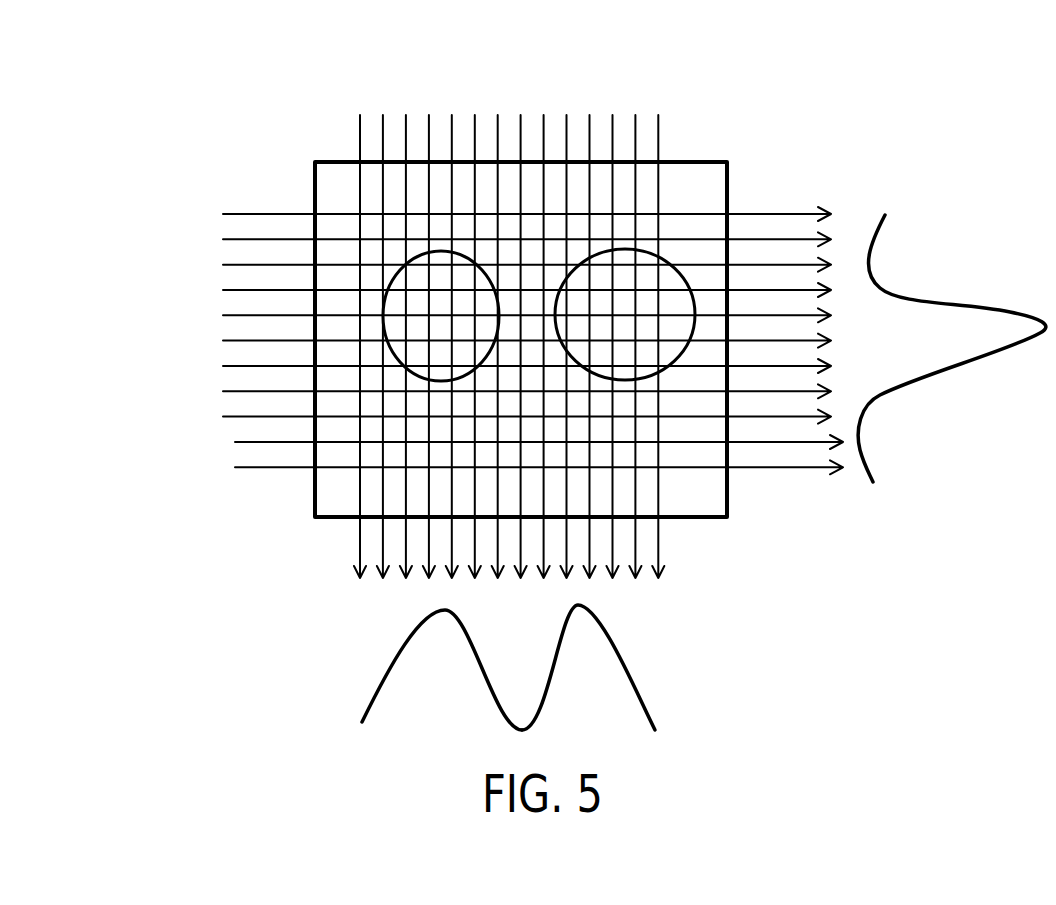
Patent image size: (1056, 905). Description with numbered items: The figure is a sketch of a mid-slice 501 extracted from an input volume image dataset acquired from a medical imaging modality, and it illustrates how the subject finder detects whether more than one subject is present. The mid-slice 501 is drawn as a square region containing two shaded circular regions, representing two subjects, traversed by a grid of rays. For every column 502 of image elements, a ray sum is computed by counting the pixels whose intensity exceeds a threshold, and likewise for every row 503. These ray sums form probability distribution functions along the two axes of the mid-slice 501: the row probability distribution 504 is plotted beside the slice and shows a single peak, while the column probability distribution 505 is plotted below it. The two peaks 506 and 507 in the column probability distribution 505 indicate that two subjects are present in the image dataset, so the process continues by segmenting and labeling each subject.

The mid-slice 501 is at (730, 173).
The column 502 is at (383, 115).
The row 503 is at (223, 214).
The row probability distribution 504 is at (945, 302).
The column probability distribution 505 is at (542, 667).
The peak 506 is at (447, 620).
The peak 507 is at (578, 620).